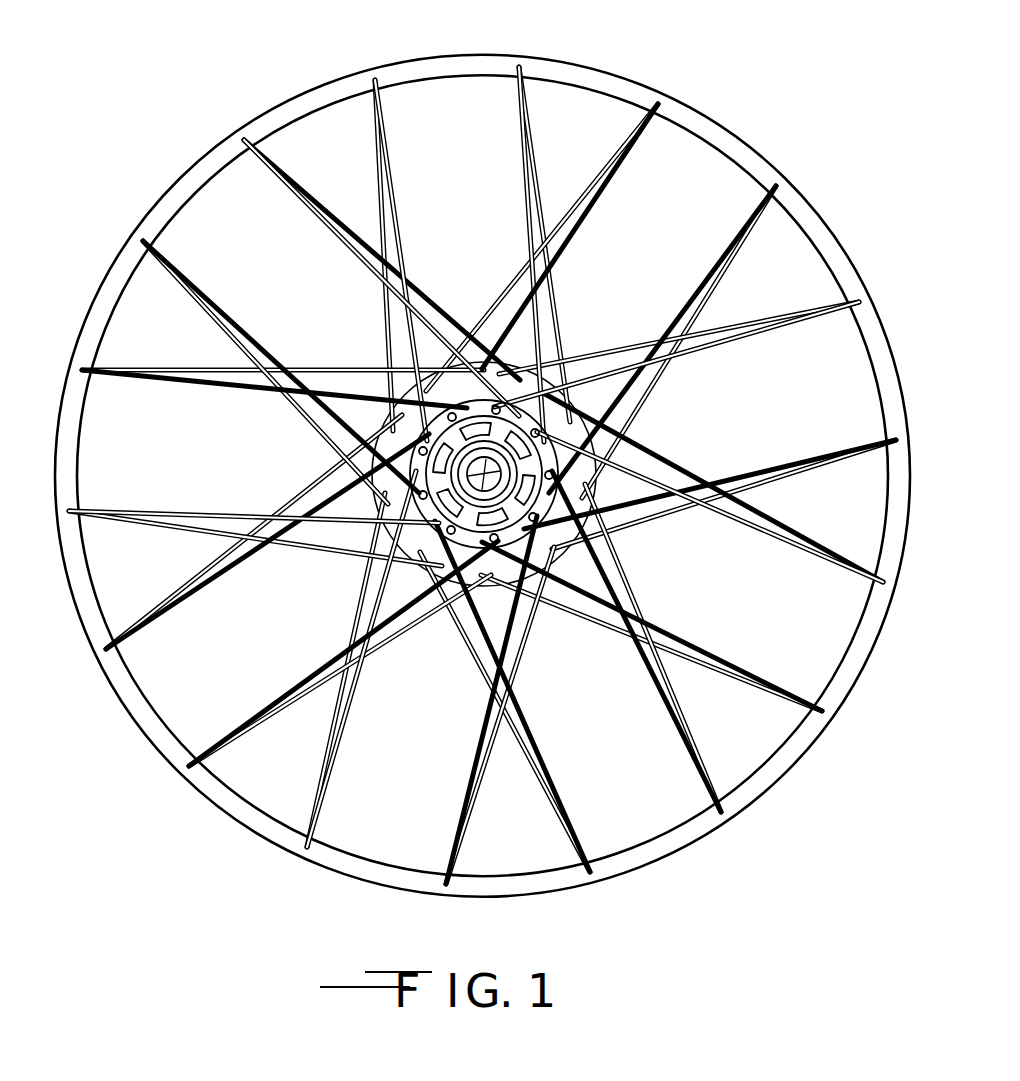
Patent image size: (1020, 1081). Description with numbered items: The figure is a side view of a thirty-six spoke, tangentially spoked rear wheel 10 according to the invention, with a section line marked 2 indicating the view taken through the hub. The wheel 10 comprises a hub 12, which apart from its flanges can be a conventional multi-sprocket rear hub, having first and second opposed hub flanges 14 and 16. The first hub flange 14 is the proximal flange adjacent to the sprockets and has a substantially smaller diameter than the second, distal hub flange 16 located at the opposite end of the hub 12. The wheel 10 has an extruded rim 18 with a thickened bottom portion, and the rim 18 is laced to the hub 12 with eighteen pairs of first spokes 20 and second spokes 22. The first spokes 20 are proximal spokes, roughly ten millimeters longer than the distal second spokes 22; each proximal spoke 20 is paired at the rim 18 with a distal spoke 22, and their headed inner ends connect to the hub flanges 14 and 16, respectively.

The wheel 10 is at (482, 452).
The hub 12 is at (482, 475).
The proximal hub flange 14 is at (600, 520).
The distal hub flange 16 is at (583, 412).
The rim 18 is at (813, 207).
The first spokes 20 is at (518, 205).
The second spokes 22 is at (540, 163).
The section line FIG. 2 is at (375, 13).